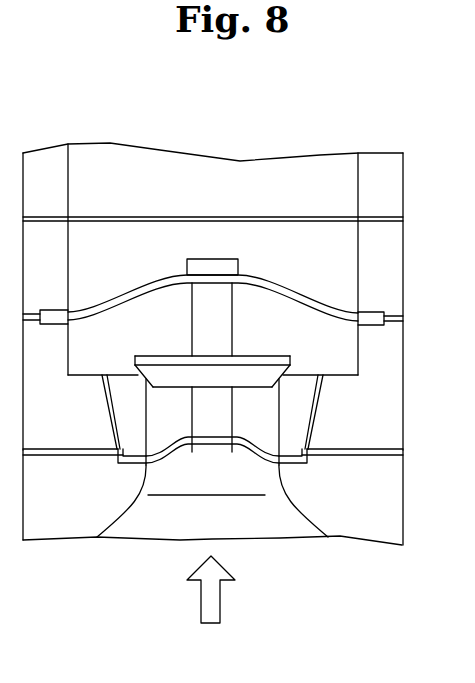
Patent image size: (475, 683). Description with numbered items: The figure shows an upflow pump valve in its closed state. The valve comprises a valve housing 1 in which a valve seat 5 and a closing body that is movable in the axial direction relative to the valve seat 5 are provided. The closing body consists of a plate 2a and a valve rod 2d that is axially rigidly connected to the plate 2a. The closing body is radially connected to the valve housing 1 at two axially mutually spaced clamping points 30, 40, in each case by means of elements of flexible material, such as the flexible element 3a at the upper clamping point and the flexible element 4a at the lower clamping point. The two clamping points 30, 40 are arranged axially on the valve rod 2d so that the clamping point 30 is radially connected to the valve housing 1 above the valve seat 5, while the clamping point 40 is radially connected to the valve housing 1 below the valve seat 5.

The valve housing 1 is at (37, 485).
The plate 2a is at (158, 373).
The valve rod 2d is at (212, 332).
The flexible element 3a is at (266, 280).
The flexible element 4a is at (265, 455).
The valve seat 5 is at (128, 415).
The clamping point 30 is at (212, 275).
The clamping point 40 is at (216, 437).